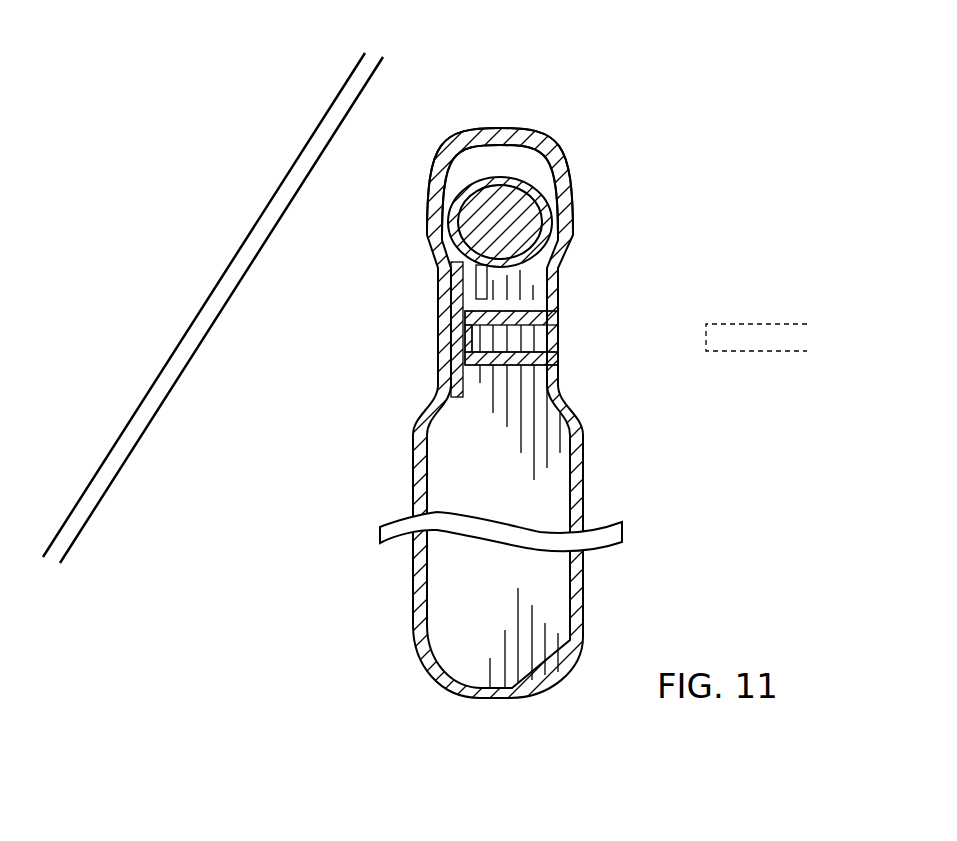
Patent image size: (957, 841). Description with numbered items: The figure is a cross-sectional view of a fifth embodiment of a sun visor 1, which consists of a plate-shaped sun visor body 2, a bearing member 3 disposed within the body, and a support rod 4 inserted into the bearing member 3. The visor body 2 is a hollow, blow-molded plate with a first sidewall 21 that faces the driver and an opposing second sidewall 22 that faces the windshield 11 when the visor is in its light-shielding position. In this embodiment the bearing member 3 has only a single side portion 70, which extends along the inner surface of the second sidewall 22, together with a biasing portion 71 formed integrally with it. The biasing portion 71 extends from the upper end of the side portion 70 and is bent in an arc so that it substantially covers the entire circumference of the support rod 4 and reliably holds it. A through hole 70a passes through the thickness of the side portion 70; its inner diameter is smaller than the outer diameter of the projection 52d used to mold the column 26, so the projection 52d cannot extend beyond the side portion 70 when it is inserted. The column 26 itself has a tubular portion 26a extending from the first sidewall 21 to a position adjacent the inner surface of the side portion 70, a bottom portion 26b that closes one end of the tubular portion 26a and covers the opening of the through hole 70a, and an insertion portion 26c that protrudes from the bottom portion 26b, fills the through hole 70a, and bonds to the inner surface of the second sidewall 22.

The sun visor 1 is at (562, 90).
The sun visor body 2 is at (396, 470).
The bearing member 3 is at (471, 168).
The support rod 4 is at (503, 229).
The windshield 11 is at (135, 420).
The first sidewall 21 is at (577, 497).
The second sidewall 22 is at (412, 502).
The column 26 is at (576, 377).
The tubular portion 26a is at (560, 349).
The bottom portion 26b is at (460, 355).
The insertion portion 26c is at (458, 335).
The projection 52d is at (778, 343).
The side portion 70 is at (432, 252).
The through hole 70a is at (440, 332).
The biasing portion 71 is at (515, 173).